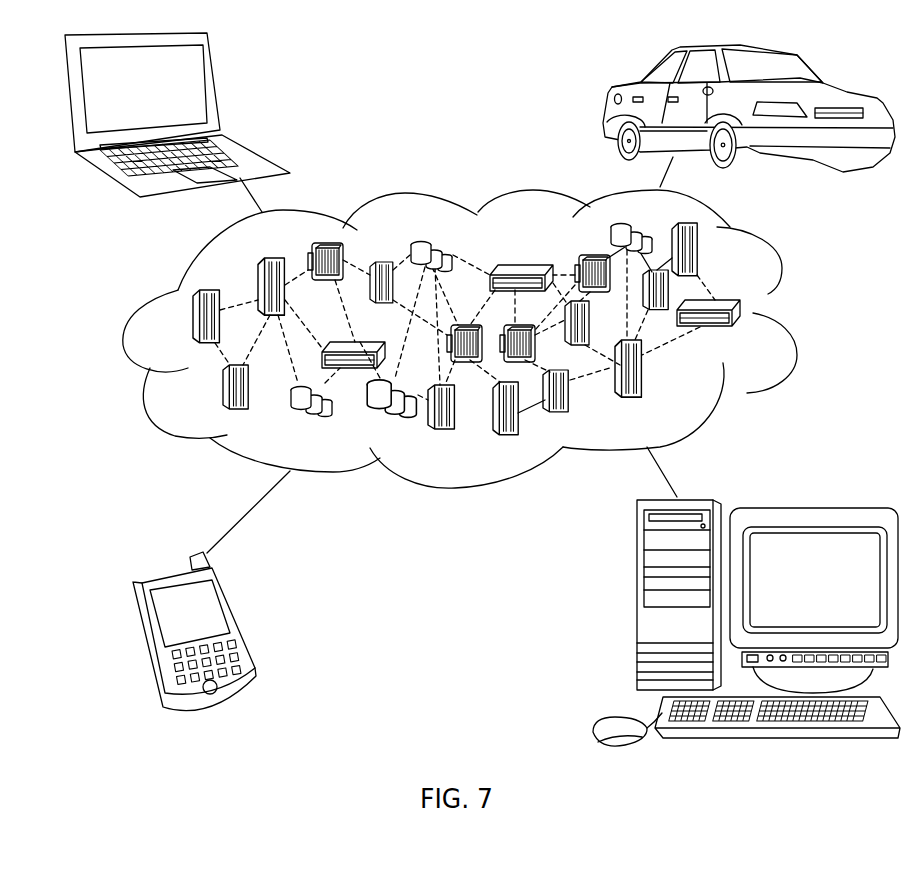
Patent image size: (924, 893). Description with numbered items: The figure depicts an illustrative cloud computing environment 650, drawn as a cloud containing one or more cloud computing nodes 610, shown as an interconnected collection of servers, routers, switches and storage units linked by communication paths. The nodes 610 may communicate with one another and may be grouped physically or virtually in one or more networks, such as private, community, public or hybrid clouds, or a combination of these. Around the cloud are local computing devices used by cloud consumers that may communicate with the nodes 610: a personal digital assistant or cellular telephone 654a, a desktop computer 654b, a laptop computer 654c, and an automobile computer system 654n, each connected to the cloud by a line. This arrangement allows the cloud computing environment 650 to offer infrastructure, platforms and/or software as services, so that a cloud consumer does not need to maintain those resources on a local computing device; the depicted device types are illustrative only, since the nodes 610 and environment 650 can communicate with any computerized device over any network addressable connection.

The cloud computing environment 650 is at (780, 260).
The cloud computing nodes 610 is at (755, 335).
The personal digital assistant (PDA) or cellular telephone 654a is at (232, 612).
The desktop computer 654b is at (637, 607).
The laptop computer 654c is at (213, 82).
The automobile computer system 654n is at (613, 90).